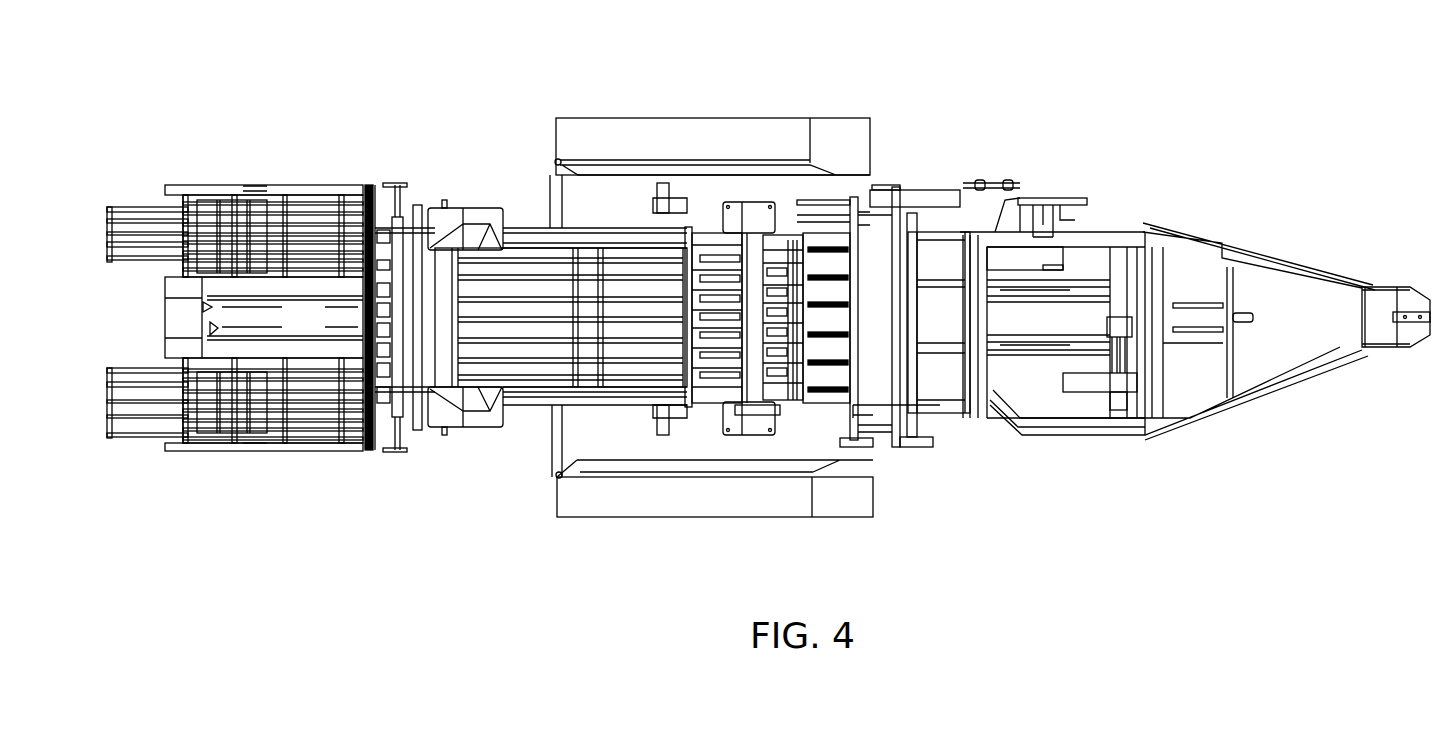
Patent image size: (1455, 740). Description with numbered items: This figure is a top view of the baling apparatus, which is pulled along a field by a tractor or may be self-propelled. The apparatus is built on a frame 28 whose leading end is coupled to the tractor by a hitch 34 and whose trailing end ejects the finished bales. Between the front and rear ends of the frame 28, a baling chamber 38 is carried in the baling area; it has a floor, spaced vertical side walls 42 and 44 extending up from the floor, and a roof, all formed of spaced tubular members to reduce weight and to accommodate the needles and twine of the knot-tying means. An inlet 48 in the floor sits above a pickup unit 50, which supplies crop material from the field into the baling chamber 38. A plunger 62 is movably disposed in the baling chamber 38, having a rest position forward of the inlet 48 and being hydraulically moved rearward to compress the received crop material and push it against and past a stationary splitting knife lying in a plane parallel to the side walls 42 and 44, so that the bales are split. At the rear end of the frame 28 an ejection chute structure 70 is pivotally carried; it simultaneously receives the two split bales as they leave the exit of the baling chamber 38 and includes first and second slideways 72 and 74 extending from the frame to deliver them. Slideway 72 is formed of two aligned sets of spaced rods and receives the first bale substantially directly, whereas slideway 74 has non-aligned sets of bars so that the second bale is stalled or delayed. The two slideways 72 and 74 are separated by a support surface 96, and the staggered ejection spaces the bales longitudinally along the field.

The frame 28 is at (591, 116).
The hitch 34 is at (1413, 292).
The baling chamber 38 is at (632, 250).
The vertical side wall 42 is at (523, 227).
The vertical side wall 44 is at (525, 406).
The inlet 48 is at (618, 383).
The pickup unit 50 is at (962, 426).
The plunger 62 is at (745, 233).
The ejection chute structure 70 is at (160, 102).
The first slideway 72 is at (247, 191).
The second slideway 74 is at (247, 446).
The support surface 96 is at (340, 317).